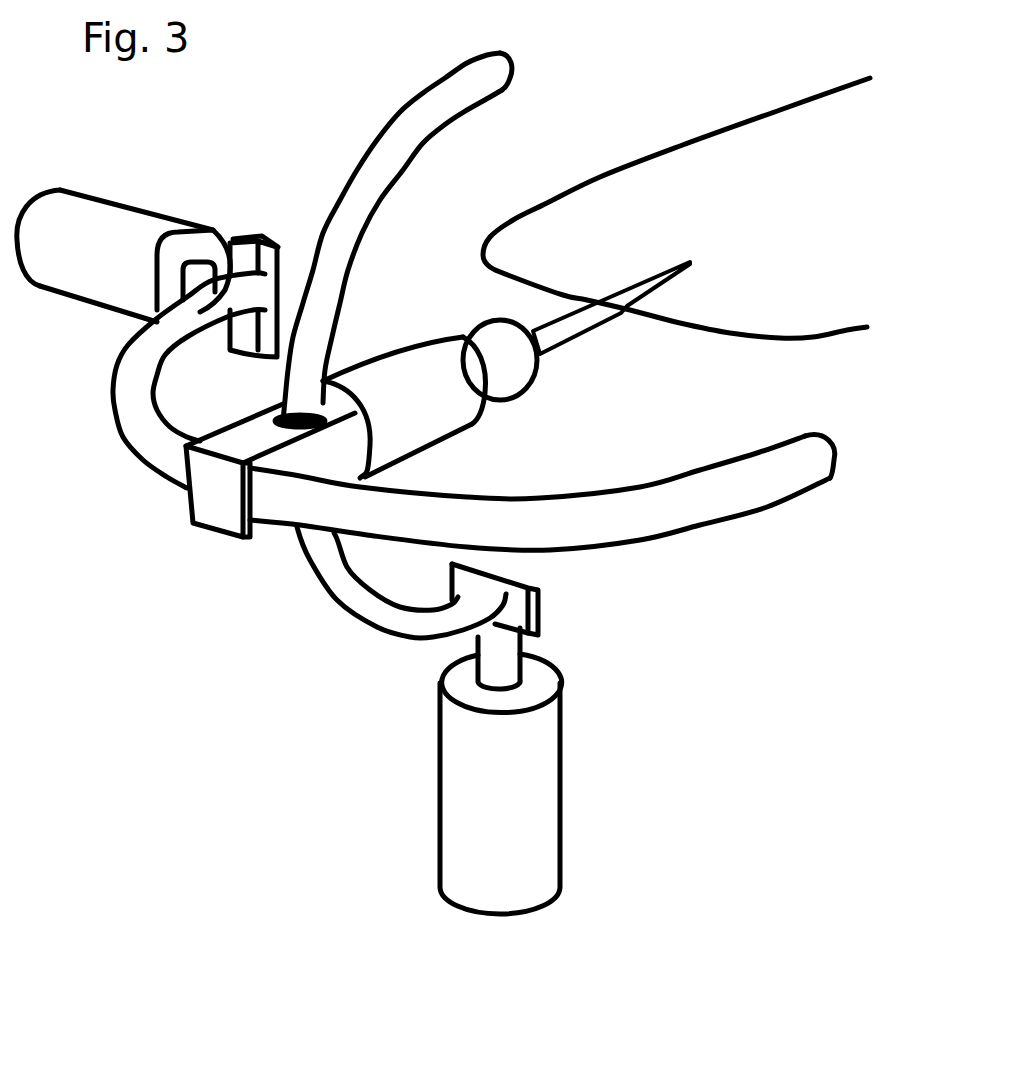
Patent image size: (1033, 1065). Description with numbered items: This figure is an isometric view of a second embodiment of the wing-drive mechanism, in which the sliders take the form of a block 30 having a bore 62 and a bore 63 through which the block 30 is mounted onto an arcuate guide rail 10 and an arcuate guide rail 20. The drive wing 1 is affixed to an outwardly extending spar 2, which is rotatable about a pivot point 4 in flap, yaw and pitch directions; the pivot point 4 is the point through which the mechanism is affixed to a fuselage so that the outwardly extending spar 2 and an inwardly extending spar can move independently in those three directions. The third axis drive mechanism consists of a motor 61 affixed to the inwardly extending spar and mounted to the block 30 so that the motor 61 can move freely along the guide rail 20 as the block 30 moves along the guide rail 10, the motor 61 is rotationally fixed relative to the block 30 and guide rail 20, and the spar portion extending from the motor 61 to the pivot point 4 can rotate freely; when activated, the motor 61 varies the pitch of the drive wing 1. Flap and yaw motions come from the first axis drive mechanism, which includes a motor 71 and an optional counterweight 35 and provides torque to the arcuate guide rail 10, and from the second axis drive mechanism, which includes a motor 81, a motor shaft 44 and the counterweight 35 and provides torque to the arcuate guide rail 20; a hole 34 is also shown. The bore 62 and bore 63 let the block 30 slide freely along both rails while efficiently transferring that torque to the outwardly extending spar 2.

The drive wing 1 is at (676, 208).
The outwardly extending spar 2 is at (592, 336).
The pivot point 4 is at (468, 331).
The arcuate guide rail 10 is at (542, 493).
The arcuate guide rail 20 is at (437, 72).
The block 30 is at (213, 517).
The hole 34 is at (193, 262).
The counterweight 35 is at (252, 240).
The motor shaft 44 is at (527, 661).
The motor 61 is at (404, 407).
The bore 62 is at (257, 540).
The bore 63 is at (215, 424).
The motor 71 is at (124, 256).
The motor 81 is at (501, 784).